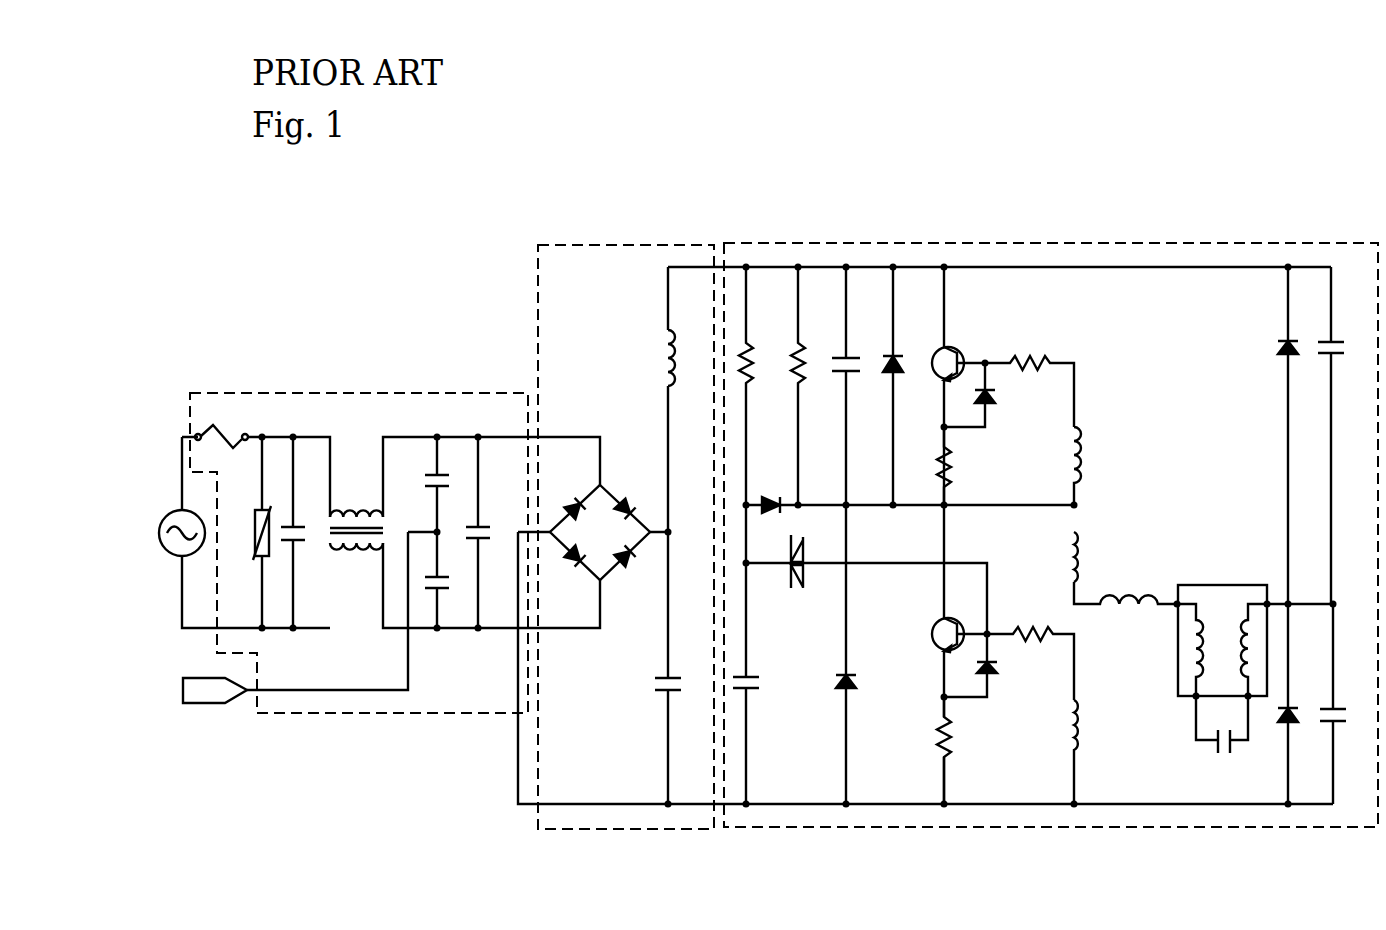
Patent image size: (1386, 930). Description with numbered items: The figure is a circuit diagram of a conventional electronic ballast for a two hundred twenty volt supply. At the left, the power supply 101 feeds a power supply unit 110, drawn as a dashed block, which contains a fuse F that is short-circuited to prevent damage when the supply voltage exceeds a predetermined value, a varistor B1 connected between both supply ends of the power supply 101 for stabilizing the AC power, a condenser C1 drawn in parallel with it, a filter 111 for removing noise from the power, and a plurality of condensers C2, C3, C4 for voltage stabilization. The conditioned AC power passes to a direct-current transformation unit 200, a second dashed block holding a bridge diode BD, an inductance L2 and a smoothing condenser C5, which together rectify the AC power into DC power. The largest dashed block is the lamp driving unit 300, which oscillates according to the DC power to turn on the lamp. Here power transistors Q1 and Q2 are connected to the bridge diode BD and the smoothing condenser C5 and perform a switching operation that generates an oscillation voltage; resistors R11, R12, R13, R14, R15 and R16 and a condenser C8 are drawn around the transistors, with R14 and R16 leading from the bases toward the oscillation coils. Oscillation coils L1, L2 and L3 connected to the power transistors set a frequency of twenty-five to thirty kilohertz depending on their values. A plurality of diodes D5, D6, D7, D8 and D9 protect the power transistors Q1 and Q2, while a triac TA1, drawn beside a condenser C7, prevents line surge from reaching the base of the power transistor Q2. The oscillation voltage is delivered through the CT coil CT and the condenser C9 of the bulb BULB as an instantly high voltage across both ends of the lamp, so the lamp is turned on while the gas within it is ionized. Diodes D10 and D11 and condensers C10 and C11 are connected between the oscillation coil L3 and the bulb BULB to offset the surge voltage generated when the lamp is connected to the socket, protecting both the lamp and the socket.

The power supply 101 is at (176, 513).
The power supply unit 110 is at (356, 393).
The filter 111 is at (356, 500).
The direct-current transformation unit 200 is at (621, 245).
The lamp driving unit 300 is at (1048, 243).
The fuse F is at (221, 427).
The varistor B1 is at (250, 533).
The condenser C1 is at (300, 533).
The condenser C2 is at (445, 485).
The condenser C3 is at (445, 582).
The condenser C4 is at (485, 533).
The bridge diode BD is at (606, 490).
The inductance / oscillation coil L2 is at (890, 456).
The smoothing condenser C5 is at (680, 684).
The resistor R11 is at (761, 415).
The resistor R12 is at (813, 386).
The condenser C8 is at (853, 386).
The diode D6 is at (903, 386).
The power transistor Q1 is at (958, 354).
The diode D8 is at (983, 395).
The resistor R13 is at (961, 466).
The resistor R14 is at (1029, 383).
The oscillation coil L1 is at (1091, 466).
The diode D5 is at (772, 494).
The triac TA1 is at (796, 573).
The condenser C7 is at (757, 683).
The diode D7 is at (861, 654).
The power transistor Q2 is at (959, 624).
The diode D9 is at (984, 665).
The resistor R15 is at (961, 750).
The resistor R16 is at (1030, 654).
The oscillation coil L3 is at (1092, 752).
The CT coil CT is at (1125, 589).
The bulb BULB is at (1222, 590).
The condenser C9 is at (1222, 735).
The diode D10 is at (1301, 435).
The condenser C11 is at (1343, 435).
The diode D11 is at (1302, 704).
The condenser C10 is at (1345, 704).